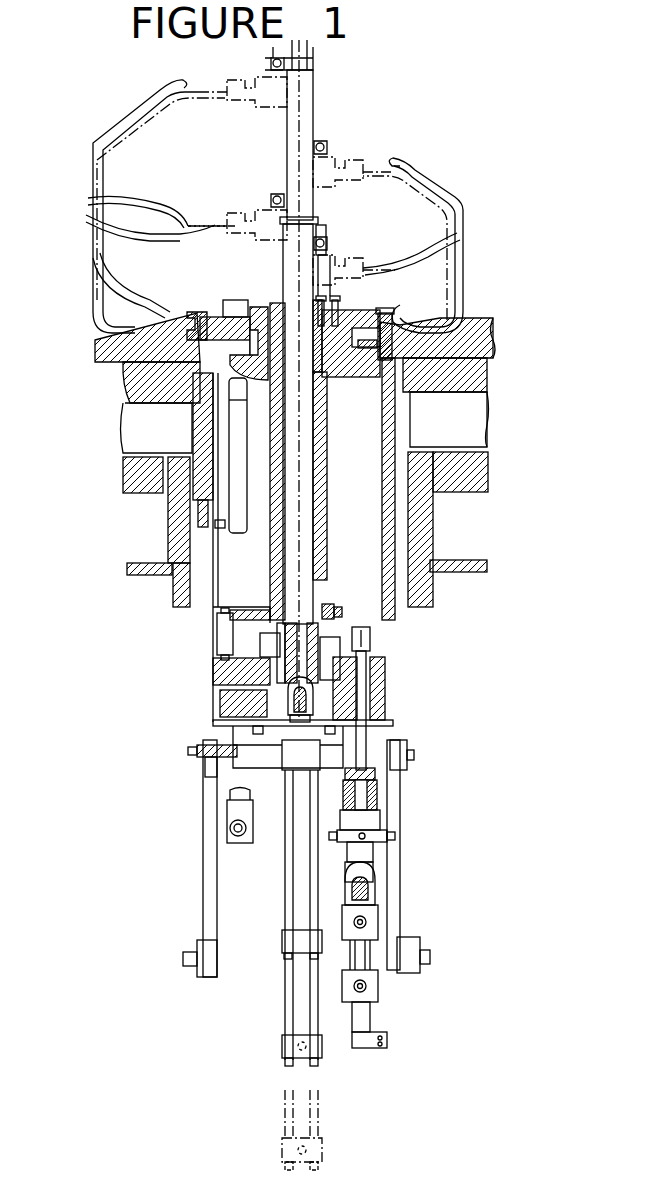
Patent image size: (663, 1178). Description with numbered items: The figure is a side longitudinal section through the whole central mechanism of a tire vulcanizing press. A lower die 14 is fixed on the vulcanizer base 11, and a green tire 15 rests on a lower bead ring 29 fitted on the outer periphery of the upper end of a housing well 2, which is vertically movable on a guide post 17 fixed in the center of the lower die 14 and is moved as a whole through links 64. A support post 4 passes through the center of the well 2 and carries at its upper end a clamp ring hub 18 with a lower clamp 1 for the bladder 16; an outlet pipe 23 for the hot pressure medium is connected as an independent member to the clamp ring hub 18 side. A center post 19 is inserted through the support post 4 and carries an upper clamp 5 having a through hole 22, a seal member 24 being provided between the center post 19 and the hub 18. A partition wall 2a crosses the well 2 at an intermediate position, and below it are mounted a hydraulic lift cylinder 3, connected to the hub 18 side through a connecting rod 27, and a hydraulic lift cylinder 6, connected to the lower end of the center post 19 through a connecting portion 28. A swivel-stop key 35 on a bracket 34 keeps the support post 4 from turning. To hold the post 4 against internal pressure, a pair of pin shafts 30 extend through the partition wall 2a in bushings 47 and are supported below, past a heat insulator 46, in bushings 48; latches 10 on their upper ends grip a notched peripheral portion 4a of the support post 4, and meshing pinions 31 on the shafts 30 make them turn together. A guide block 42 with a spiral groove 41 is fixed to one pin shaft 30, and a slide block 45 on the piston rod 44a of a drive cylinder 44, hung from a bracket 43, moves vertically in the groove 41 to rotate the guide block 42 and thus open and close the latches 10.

The lower clamp 1 is at (241, 306).
The housing well 2 is at (182, 580).
The partition wall 2a is at (205, 686).
The hydraulic lift cylinder 3 is at (295, 1006).
The support post 4 is at (275, 538).
The notched peripheral portion 4a is at (217, 622).
The upper clamp 5 is at (232, 220).
The hydraulic lift cylinder 6 is at (305, 881).
The latch 10 is at (265, 641).
The vulcanizer base 11 is at (128, 484).
The lower die 14 is at (185, 342).
The green tire 15 is at (113, 126).
The bladder 16 is at (172, 208).
The guide post 17 is at (200, 526).
The clamp ring hub 18 is at (355, 302).
The center post 19 is at (305, 523).
The through hole 22 is at (172, 372).
The outlet pipe 23 is at (235, 488).
The seal member 24 is at (325, 292).
The connecting rod 27 is at (228, 525).
The connecting portion 28 is at (252, 668).
The lower bead ring 29 is at (210, 316).
The pin shaft 30 is at (382, 736).
The pinion 31 is at (378, 791).
The bracket 34 is at (245, 610).
The swivel-stop key 35 is at (330, 606).
The spiral groove 41 is at (382, 826).
The guide block 42 is at (382, 806).
The bracket 43 is at (215, 746).
The drive cylinder 44 is at (355, 956).
The piston rod 44a is at (378, 890).
The slide block 45 is at (350, 850).
The heat insulator 46 is at (222, 702).
The bushing 47 is at (366, 666).
The bushing 48 is at (366, 771).
The link 64 is at (207, 901).